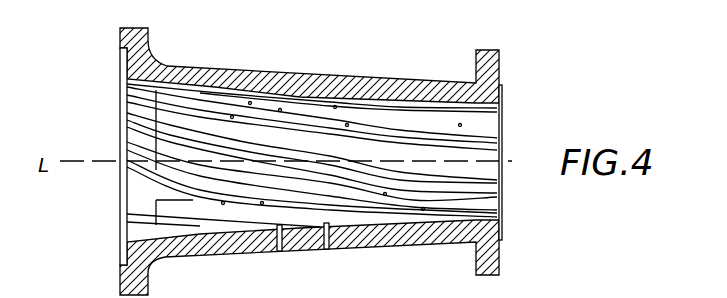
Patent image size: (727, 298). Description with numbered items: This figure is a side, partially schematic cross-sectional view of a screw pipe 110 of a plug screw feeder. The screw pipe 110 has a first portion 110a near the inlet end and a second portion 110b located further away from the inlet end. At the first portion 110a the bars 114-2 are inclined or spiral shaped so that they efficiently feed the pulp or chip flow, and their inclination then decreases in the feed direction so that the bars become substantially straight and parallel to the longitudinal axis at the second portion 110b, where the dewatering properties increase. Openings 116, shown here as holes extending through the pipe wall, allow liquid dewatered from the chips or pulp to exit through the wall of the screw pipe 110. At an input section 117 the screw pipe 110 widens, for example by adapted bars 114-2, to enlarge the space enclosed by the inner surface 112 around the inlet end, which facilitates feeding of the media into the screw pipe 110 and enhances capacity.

The screw pipe 110 is at (52, 107).
The first portion of the screw pipe unit 110a is at (213, 52).
The second portion of the screw pipe unit 110b is at (428, 56).
The inner surface of the screw pipe 112 is at (187, 117).
The inclined bars 114-2 is at (190, 202).
The openings 116 is at (328, 250).
The input section 117 is at (133, 207).